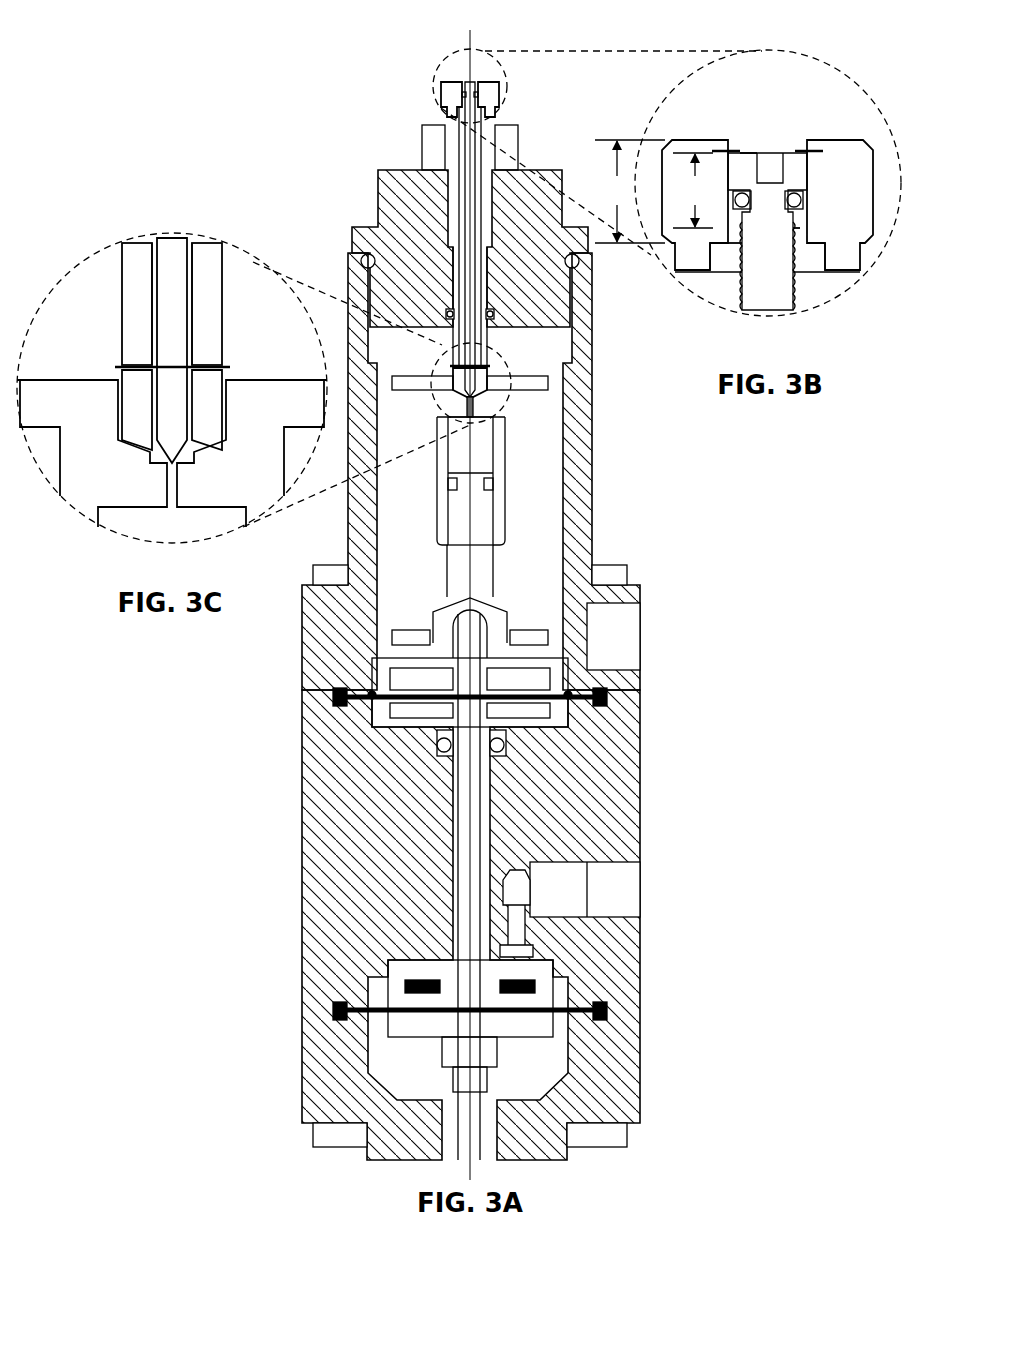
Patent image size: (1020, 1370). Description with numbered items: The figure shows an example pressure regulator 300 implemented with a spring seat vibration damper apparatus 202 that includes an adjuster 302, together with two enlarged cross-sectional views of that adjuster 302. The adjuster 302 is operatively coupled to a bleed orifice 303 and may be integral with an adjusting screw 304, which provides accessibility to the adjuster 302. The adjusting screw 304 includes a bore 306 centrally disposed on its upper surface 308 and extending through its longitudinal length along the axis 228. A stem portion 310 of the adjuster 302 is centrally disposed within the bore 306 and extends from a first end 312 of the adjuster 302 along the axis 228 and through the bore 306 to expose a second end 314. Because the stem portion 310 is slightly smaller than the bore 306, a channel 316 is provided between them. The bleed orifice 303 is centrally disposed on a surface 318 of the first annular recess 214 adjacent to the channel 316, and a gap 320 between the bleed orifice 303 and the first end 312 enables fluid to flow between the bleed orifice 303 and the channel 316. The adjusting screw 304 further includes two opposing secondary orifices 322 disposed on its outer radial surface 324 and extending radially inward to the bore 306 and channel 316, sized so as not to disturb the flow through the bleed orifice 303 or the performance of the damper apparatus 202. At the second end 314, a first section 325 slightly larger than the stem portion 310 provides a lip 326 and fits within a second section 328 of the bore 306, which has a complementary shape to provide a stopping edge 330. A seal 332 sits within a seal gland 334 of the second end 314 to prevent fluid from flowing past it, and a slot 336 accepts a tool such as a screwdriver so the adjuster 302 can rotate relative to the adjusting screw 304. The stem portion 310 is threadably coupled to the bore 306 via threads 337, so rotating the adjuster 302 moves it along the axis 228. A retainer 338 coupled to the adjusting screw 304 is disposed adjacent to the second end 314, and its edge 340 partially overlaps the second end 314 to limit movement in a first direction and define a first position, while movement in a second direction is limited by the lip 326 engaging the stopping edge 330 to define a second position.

In FIG. 3A, the pressure regulator 300 is at (274, 106).
In FIG. 3A, the adjuster 302 is at (494, 36).
In FIG. 3A, the spring seat vibration damper apparatus 202 is at (422, 572).
In FIG. 3A, the first annular recess 214 is at (488, 386).
In FIG. 3C, the first annular recess 214 is at (117, 418).
In FIG. 3A, the axis 228 is at (477, 594).
In FIG. 3A, the bleed orifice 303 is at (466, 407).
In FIG. 3C, the bleed orifice 303 is at (182, 495).
In FIG. 3A, the adjusting screw 304 is at (503, 92).
In FIG. 3B, the adjusting screw 304 is at (875, 222).
In FIG. 3C, the adjusting screw 304 is at (220, 265).
In FIG. 3A, the bore 306 is at (461, 135).
In FIG. 3B, the bore 306 is at (794, 270).
In FIG. 3C, the bore 306 is at (196, 315).
In FIG. 3A, the upper surface 308 is at (450, 79).
In FIG. 3B, the upper surface 308 is at (860, 140).
In FIG. 3A, the stem portion 310 is at (477, 257).
In FIG. 3B, the stem portion 310 is at (768, 293).
In FIG. 3C, the stem portion 310 is at (177, 243).
In FIG. 3C, the first end 312 is at (195, 450).
In FIG. 3B, the second end 314 is at (752, 152).
In FIG. 3C, the channel 316 is at (152, 328).
In FIG. 3A, the surface 318 is at (476, 399).
In FIG. 3C, the surface 318 is at (157, 453).
In FIG. 3C, the gap 320 is at (170, 466).
In FIG. 3A, the secondary orifice 322 is at (457, 362).
In FIG. 3C, the secondary orifice 322 is at (138, 363).
In FIG. 3A, the outer radial surface 324 is at (490, 327).
In FIG. 3C, the outer radial surface 324 is at (121, 267).
In FIG. 3B, the first section 325 is at (693, 190).
In FIG. 3B, the lip 326 is at (744, 232).
In FIG. 3B, the second section 328 is at (629, 191).
In FIG. 3B, the stopping edge 330 is at (737, 243).
In FIG. 3B, the seal 332 is at (802, 200).
In FIG. 3B, the seal gland 334 is at (796, 228).
In FIG. 3B, the slot 336 is at (770, 163).
In FIG. 3B, the threads 337 is at (690, 276).
In FIG. 3B, the retainer 338 is at (712, 150).
In FIG. 3B, the edge 340 is at (793, 150).